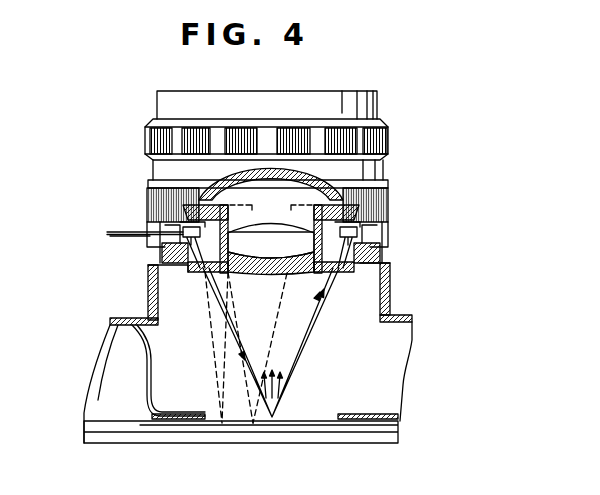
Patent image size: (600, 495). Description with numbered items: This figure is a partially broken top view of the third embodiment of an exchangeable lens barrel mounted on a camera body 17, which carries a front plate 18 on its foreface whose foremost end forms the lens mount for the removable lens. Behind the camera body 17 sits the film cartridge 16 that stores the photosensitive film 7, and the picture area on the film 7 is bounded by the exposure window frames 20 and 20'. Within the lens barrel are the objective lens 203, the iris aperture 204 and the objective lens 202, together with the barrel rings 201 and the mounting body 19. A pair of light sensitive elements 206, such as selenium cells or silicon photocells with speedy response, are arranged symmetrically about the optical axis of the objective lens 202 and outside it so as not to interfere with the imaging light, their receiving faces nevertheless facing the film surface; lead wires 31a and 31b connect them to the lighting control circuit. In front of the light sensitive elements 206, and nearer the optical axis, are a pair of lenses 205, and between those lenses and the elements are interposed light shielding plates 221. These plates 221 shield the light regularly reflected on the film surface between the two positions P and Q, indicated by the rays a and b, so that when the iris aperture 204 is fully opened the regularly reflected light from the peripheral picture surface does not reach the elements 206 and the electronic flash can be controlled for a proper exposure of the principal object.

The focusing ring 201 is at (388, 137).
The objective lens 203 is at (388, 190).
The iris aperture 204 is at (293, 184).
The light sensitive elements 206 is at (170, 224).
The objective lens 202 is at (269, 276).
The light shielding plate 221 is at (396, 264).
The mounting body 19 is at (376, 248).
The lenses 205 is at (205, 280).
The lead wire 31a is at (107, 232).
The lead wire 31b is at (112, 238).
The camera body 17 is at (126, 318).
The front plate 18 is at (393, 292).
The film cartridge 16 is at (108, 368).
The exposure window frame 20' is at (178, 399).
The exposure window frame 20 is at (368, 399).
The film 7 is at (312, 430).
The position P is at (255, 425).
The position Q is at (222, 425).
The ray a is at (277, 337).
The ray b is at (231, 292).